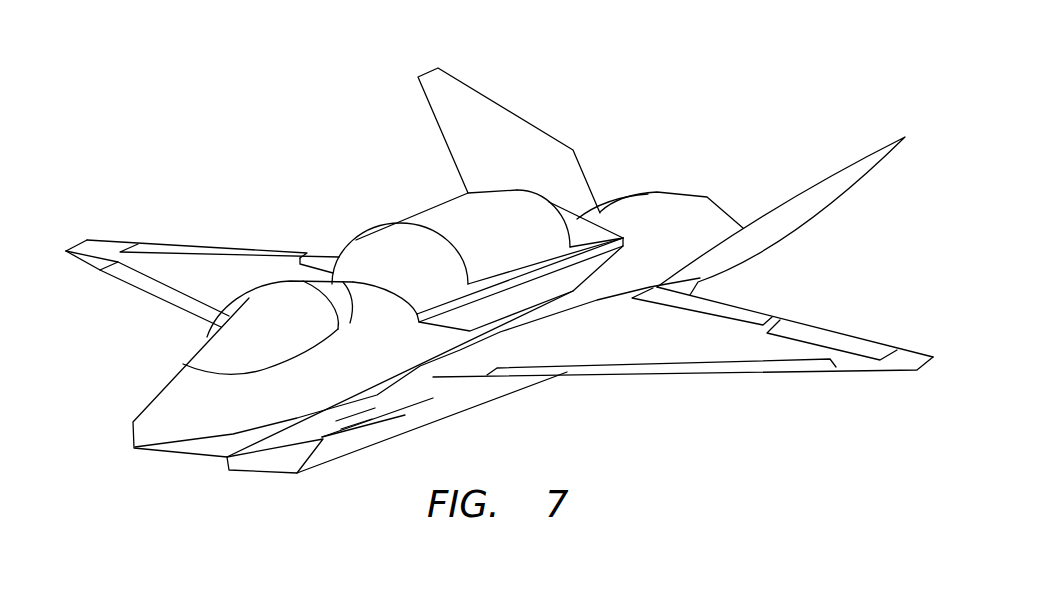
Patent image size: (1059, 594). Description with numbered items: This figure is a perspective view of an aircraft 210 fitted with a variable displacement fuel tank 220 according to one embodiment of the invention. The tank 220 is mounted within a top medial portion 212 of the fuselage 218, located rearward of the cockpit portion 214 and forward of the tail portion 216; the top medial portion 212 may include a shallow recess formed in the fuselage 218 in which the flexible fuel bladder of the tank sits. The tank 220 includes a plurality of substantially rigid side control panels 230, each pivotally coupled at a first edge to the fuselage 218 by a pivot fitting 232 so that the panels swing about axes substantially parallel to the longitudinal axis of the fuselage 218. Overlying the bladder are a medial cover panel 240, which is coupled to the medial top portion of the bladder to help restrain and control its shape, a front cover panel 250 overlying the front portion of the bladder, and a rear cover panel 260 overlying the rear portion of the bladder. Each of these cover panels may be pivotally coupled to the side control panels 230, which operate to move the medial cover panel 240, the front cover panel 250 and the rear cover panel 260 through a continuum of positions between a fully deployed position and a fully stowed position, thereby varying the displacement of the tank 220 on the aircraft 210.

The aircraft 210 is at (297, 126).
The top medial portion 212 is at (430, 348).
The cockpit portion 214 is at (216, 350).
The tail portion 216 is at (690, 206).
The fuselage 218 is at (645, 278).
The variable displacement fuel tank 220 is at (423, 173).
The side control panels 230 is at (530, 270).
The pivot fitting 232 is at (587, 258).
The medial cover panel 240 is at (490, 203).
The front cover panel 250 is at (356, 252).
The rear cover panel 260 is at (577, 217).